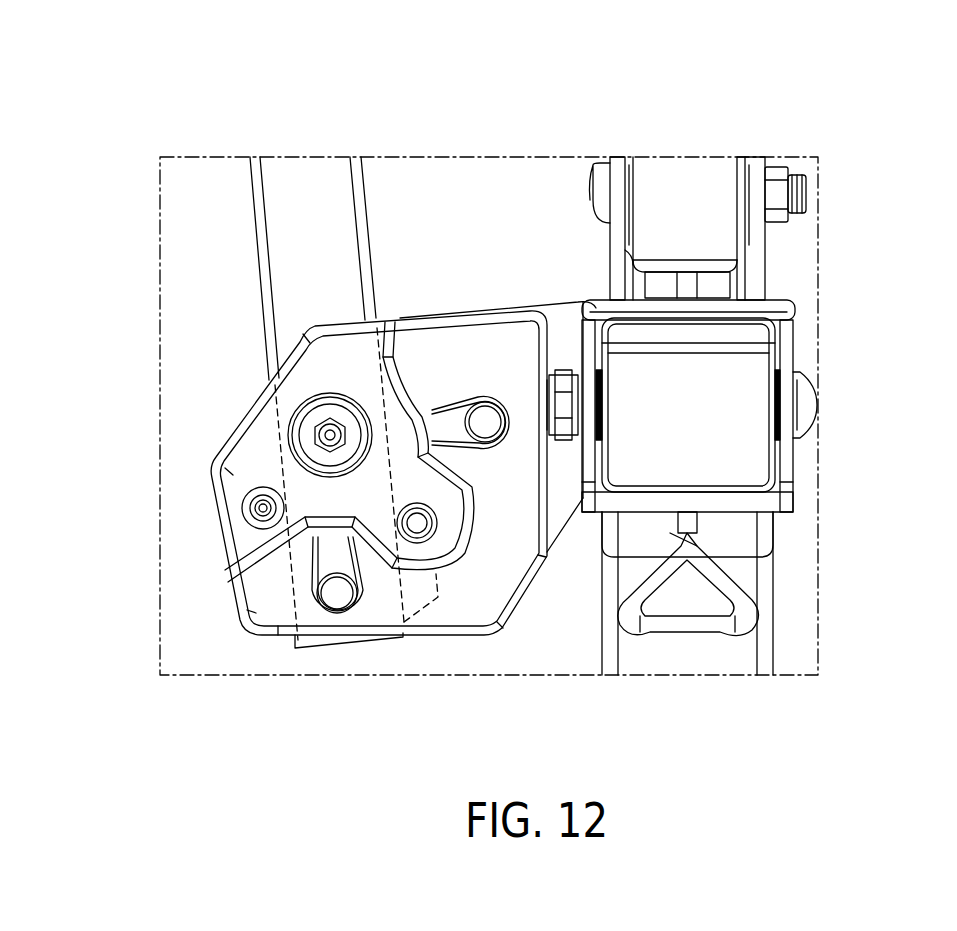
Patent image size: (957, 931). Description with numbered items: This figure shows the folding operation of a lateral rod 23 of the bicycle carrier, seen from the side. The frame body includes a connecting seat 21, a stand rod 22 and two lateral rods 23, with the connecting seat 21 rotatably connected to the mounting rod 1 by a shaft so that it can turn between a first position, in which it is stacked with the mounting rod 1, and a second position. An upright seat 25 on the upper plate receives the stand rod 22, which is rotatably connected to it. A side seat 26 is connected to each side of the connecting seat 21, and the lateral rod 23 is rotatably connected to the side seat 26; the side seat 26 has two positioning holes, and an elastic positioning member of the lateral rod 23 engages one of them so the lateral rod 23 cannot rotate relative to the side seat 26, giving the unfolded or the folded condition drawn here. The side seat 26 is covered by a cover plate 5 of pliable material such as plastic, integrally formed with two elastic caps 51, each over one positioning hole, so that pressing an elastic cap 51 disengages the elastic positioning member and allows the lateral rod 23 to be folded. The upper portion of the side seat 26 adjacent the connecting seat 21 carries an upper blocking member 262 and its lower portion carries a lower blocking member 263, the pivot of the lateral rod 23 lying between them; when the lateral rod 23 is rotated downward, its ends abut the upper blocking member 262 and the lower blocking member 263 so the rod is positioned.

The mounting rod 1 is at (745, 452).
The cover plate 5 is at (468, 600).
The connecting seat 21 is at (800, 294).
The stand rod 22 is at (688, 172).
The lateral rod 23 is at (335, 232).
The upright seat 25 is at (758, 165).
The side seat 26 is at (566, 510).
The elastic cap 51 is at (484, 410).
The upper blocking member 262 is at (553, 310).
The lower blocking member 263 is at (265, 512).